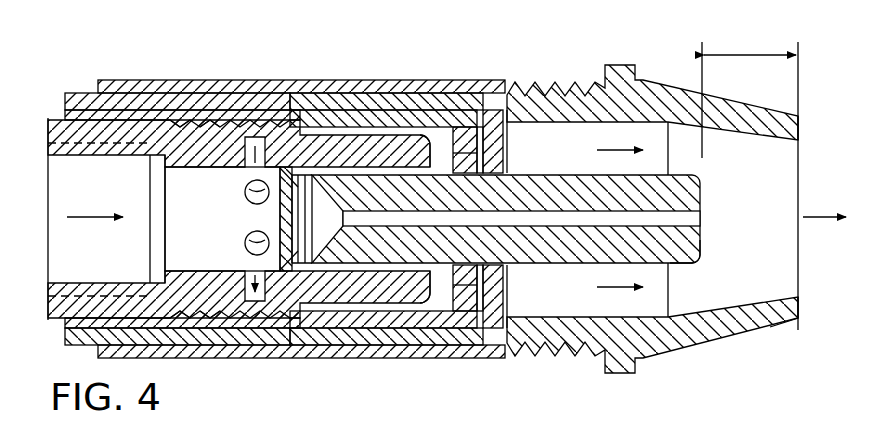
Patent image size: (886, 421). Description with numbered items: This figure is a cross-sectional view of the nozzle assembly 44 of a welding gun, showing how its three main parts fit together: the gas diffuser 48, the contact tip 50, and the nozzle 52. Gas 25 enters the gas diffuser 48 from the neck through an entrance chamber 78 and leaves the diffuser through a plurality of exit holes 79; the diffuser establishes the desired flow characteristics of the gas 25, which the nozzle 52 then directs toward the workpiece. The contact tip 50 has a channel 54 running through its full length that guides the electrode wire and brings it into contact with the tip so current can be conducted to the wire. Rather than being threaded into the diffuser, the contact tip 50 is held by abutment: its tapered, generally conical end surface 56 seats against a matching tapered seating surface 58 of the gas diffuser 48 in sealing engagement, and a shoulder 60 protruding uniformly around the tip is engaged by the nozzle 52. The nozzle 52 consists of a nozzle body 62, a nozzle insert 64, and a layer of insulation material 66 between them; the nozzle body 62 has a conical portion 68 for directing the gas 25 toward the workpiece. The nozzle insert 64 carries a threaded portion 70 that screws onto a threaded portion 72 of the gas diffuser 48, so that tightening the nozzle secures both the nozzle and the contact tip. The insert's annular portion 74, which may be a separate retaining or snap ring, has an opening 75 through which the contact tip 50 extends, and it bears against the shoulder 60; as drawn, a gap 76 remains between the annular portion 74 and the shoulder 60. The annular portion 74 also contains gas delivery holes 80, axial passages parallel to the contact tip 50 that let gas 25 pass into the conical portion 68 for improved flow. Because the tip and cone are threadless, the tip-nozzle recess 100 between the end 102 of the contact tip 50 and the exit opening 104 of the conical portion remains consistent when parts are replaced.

The gas 25 is at (90, 222).
The nozzle assembly 44 is at (416, 52).
The gas diffuser 48 is at (48, 153).
The contact tip 50 is at (700, 174).
The nozzle 52 is at (554, 74).
The channel 54 is at (708, 217).
The end surface 56 is at (304, 263).
The seating surface 58 is at (320, 176).
The shoulder 60 is at (426, 138).
The nozzle body 62 is at (304, 80).
The nozzle insert 64 is at (273, 118).
The layer of insulation material 66 is at (148, 100).
The conical portion 68 is at (798, 320).
The threaded portion 70 is at (178, 118).
The threaded portion 72 is at (211, 126).
The annular portion 74 is at (478, 156).
The opening 75 is at (456, 265).
The gap 76 is at (449, 268).
The entrance chamber 78 is at (145, 261).
The exit holes 79 is at (248, 200).
The gas delivery holes 80 is at (476, 142).
The tip-nozzle recess 100 is at (750, 55).
The end 102 is at (705, 256).
The exit opening 104 is at (800, 163).